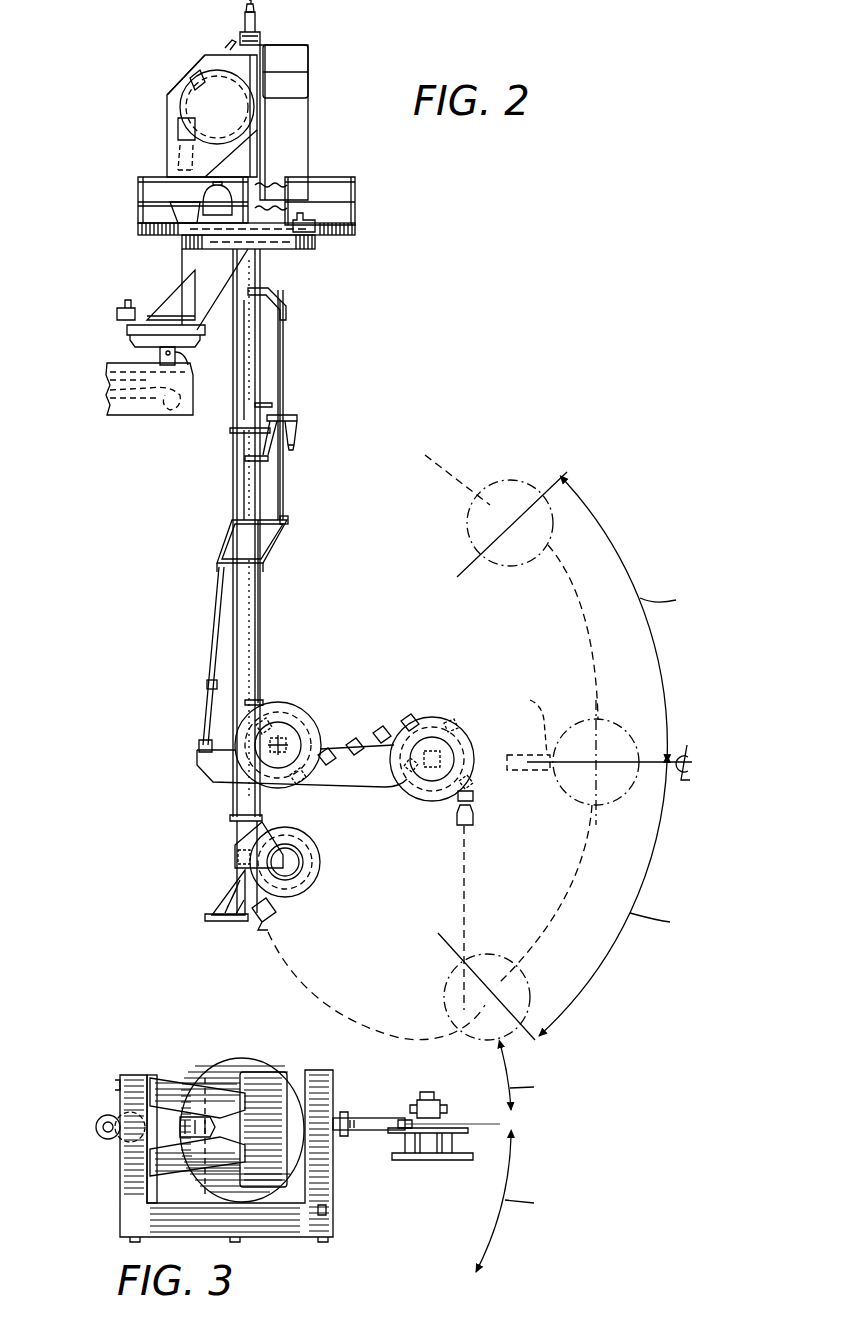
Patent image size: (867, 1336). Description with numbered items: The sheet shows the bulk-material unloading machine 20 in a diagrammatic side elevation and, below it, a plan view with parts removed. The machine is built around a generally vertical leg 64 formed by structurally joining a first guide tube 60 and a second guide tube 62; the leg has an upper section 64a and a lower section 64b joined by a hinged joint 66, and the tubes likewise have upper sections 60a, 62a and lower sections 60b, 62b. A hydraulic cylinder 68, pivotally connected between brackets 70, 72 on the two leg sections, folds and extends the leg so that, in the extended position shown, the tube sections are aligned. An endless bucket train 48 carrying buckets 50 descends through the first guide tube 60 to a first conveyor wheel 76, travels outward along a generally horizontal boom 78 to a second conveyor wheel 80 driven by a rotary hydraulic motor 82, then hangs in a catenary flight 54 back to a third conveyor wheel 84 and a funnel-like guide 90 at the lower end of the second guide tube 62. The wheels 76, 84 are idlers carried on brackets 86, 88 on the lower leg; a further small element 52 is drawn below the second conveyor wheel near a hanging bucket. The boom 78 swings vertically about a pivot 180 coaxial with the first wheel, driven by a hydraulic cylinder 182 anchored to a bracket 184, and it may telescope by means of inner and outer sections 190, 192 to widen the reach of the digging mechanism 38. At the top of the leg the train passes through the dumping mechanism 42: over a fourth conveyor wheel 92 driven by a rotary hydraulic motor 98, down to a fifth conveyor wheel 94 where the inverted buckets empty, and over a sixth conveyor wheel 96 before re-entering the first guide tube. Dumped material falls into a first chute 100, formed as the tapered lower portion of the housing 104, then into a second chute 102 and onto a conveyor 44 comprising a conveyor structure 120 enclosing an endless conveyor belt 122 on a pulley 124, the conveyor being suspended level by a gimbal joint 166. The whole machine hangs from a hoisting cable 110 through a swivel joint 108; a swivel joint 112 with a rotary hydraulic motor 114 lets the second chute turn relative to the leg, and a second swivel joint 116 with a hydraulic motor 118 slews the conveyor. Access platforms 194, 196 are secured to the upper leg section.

In FIG. 2, the unloading machine 20 is at (612, 480).
In FIG. 2, the digging mechanism 38 is at (453, 700).
In FIG. 2, the dumping mechanism 42 is at (160, 102).
In FIG. 2, the conveyor 44 is at (118, 362).
In FIG. 2, the bucket train 48 is at (372, 724).
In FIG. 2, the buckets 50 is at (474, 816).
In FIG. 2, the bracket 52 is at (471, 796).
In FIG. 2, the catenary flight 54 is at (312, 985).
In FIG. 2, the first guide tube 60 is at (245, 668).
In FIG. 3, the first guide tube 60 is at (150, 1200).
In FIG. 2, the upper section of first guide tube 60a is at (232, 408).
In FIG. 2, the lower section of first guide tube 60b is at (233, 500).
In FIG. 2, the second guide tube 62 is at (240, 800).
In FIG. 3, the second guide tube 62 is at (205, 1075).
In FIG. 2, the upper section of second guide tube 62a is at (252, 375).
In FIG. 2, the lower section of second guide tube 62b is at (245, 470).
In FIG. 2, the leg 64 is at (268, 132).
In FIG. 2, the upper section of leg 64a is at (285, 322).
In FIG. 2, the lower section of leg 64b is at (262, 590).
In FIG. 2, the hinged joint 66 is at (275, 418).
In FIG. 2, the hydraulic cylinder 68 is at (288, 358).
In FIG. 2, the bracket 70 is at (290, 310).
In FIG. 2, the bracket 72 is at (280, 540).
In FIG. 2, the first conveyor wheel 76 is at (275, 725).
In FIG. 3, the first conveyor wheel 76 is at (296, 1205).
In FIG. 2, the boom 78 is at (332, 788).
In FIG. 3, the boom 78 is at (343, 1135).
In FIG. 2, the second conveyor wheel 80 is at (555, 543).
In FIG. 3, the second conveyor wheel 80 is at (398, 1160).
In FIG. 3, the rotary hydraulic motor 82 is at (430, 1102).
In FIG. 2, the third conveyor wheel 84 is at (305, 885).
In FIG. 3, the third conveyor wheel 84 is at (300, 1120).
In FIG. 2, the bracket 86 is at (285, 730).
In FIG. 2, the bracket 88 is at (292, 848).
In FIG. 2, the funnel-like guide 90 is at (205, 913).
In FIG. 3, the fourth conveyor wheel 92 is at (150, 1080).
In FIG. 2, the fifth conveyor wheel 94 is at (170, 143).
In FIG. 3, the fifth conveyor wheel 94 is at (130, 1065).
In FIG. 2, the sixth conveyor wheel 96 is at (222, 90).
In FIG. 3, the sixth conveyor wheel 96 is at (150, 1160).
In FIG. 3, the rotary hydraulic motor 98 is at (192, 1090).
In FIG. 2, the first chute 100 is at (175, 212).
In FIG. 2, the second chute 102 is at (200, 260).
In FIG. 2, the housing 104 is at (170, 85).
In FIG. 2, the swivel joint 108 is at (268, 32).
In FIG. 2, the hoisting cable 110 is at (244, 4).
In FIG. 2, the swivel joint 112 is at (178, 240).
In FIG. 2, the rotary hydraulic motor 114 is at (317, 217).
In FIG. 2, the second swivel joint 116 is at (125, 333).
In FIG. 2, the hydraulic motor 118 is at (125, 300).
In FIG. 3, the hydraulic motor 118 is at (100, 1128).
In FIG. 2, the conveyor structure 120 is at (112, 415).
In FIG. 2, the endless conveyor belt 122 is at (125, 370).
In FIG. 2, the pulley 124 is at (120, 392).
In FIG. 2, the gimbal joint 166 is at (190, 358).
In FIG. 2, the pivot 180 is at (290, 735).
In FIG. 2, the hydraulic cylinder 182 is at (215, 603).
In FIG. 2, the bracket 184 is at (223, 545).
In FIG. 3, the inner section of boom 190 is at (340, 1117).
In FIG. 3, the outer section of boom 192 is at (410, 1118).
In FIG. 2, the access platform 194 is at (293, 90).
In FIG. 3, the access platform 194 is at (262, 1072).
In FIG. 2, the access platform 196 is at (343, 217).
In FIG. 3, the access platform 196 is at (330, 1210).